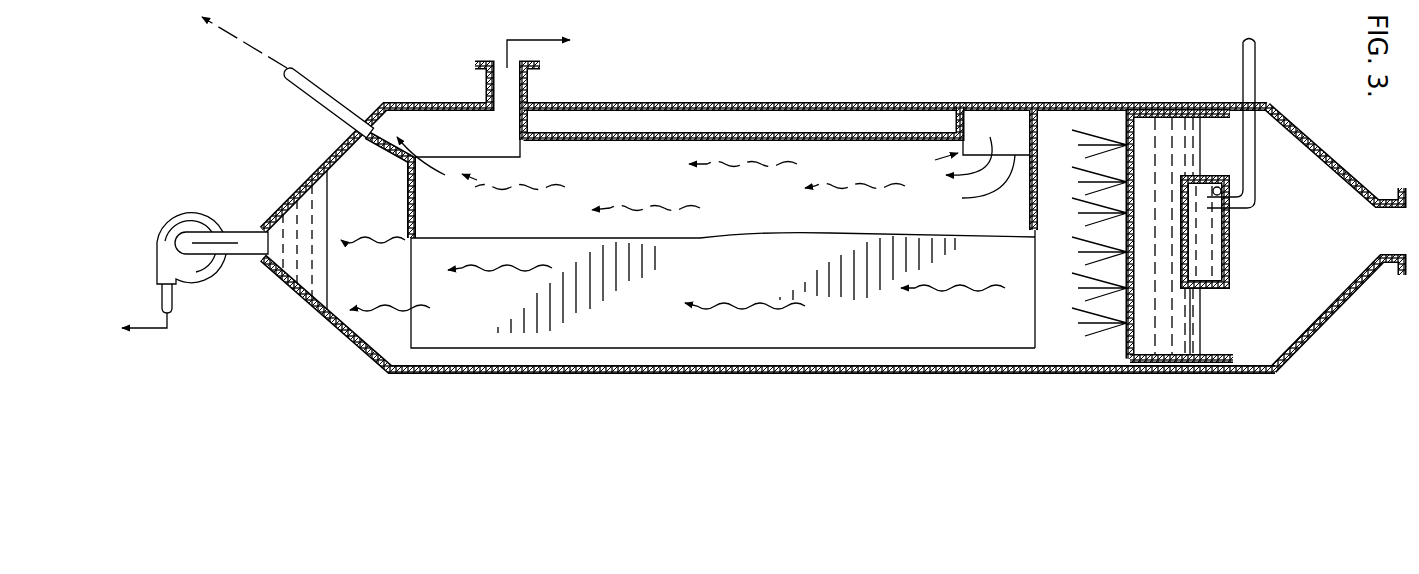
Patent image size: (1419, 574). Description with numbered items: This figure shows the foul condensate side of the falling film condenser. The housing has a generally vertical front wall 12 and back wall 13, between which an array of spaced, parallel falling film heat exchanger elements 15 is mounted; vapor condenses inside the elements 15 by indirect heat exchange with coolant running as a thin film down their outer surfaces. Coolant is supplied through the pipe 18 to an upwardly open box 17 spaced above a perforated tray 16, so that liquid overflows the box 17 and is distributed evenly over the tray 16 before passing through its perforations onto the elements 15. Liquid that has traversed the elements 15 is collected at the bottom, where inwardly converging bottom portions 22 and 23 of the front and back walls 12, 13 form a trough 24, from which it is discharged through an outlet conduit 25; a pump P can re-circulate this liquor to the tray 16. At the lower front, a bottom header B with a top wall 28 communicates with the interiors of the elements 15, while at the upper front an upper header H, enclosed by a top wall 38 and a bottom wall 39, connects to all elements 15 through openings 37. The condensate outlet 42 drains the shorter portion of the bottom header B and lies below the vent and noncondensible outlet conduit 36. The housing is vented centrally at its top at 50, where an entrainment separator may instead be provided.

The front wall 12 is at (805, 100).
The back wall 13 is at (810, 376).
The falling film heat exchanger elements 15 is at (1041, 311).
The perforated tray 16 is at (1135, 126).
The upwardly open box 17 is at (1222, 177).
The pipe 18 is at (1256, 168).
The bottom portion of front wall 22 is at (307, 195).
The bottom portion of back wall 23 is at (335, 326).
The trough 24 is at (305, 305).
The outlet conduit 25 is at (240, 256).
The top wall 28 is at (528, 128).
The vent and noncondensible outlet conduit 36 is at (483, 78).
The openings 37 is at (706, 174).
The top wall 38 is at (1038, 128).
The bottom wall 39 is at (957, 120).
The condensate outlet 42 is at (326, 91).
The vent 50 is at (1379, 291).
The bottom header B is at (430, 100).
The upper header H is at (978, 93).
The pump P is at (185, 308).